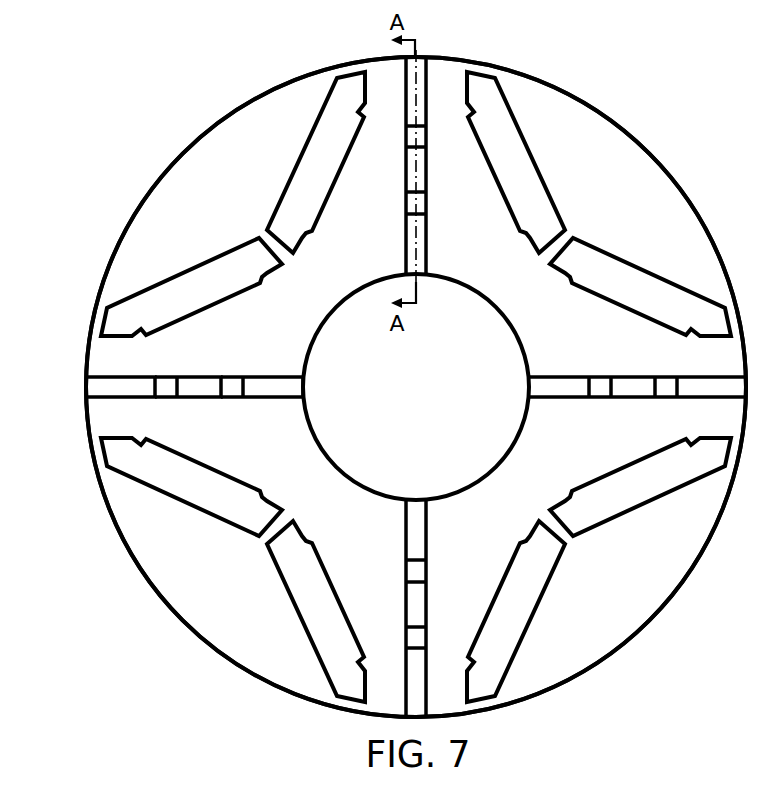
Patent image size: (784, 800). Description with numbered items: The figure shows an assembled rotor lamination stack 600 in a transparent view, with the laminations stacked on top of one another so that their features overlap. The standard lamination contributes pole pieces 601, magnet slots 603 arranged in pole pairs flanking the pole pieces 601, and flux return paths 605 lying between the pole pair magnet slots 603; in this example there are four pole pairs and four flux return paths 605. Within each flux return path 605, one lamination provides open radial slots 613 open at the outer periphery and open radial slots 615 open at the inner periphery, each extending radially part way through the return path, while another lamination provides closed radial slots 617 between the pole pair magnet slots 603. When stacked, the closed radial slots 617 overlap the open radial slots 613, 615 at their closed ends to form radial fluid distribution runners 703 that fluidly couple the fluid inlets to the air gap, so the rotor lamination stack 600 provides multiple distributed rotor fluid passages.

The rotor lamination stack 600 is at (640, 106).
The pole pieces 601 is at (197, 162).
The magnet slots 603 is at (333, 118).
The flux return paths 605 is at (438, 90).
The open radial slots 613 is at (117, 392).
The open radial slots 615 is at (275, 393).
The closed radial slots 617 is at (200, 393).
The radial fluid distribution runners 703 is at (420, 233).